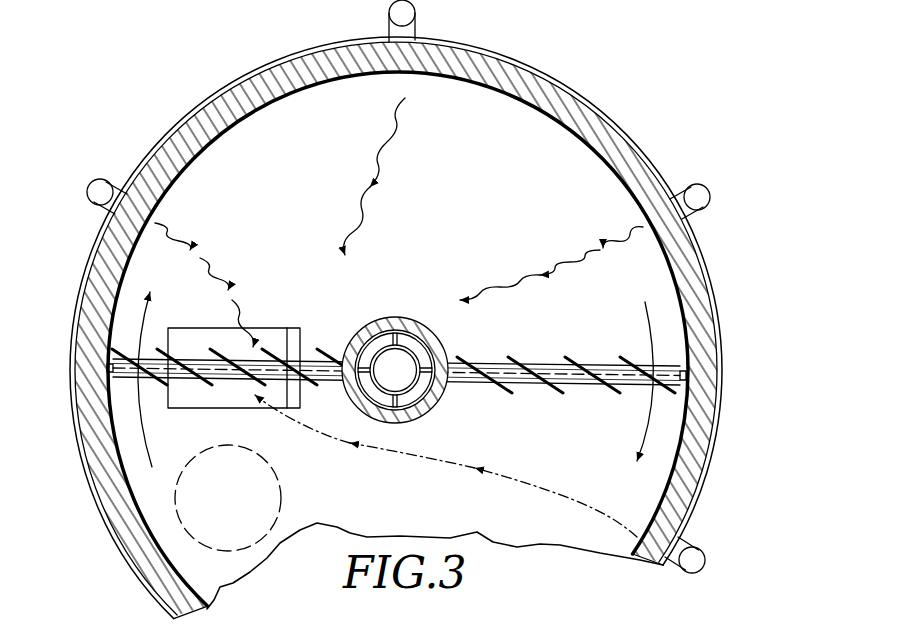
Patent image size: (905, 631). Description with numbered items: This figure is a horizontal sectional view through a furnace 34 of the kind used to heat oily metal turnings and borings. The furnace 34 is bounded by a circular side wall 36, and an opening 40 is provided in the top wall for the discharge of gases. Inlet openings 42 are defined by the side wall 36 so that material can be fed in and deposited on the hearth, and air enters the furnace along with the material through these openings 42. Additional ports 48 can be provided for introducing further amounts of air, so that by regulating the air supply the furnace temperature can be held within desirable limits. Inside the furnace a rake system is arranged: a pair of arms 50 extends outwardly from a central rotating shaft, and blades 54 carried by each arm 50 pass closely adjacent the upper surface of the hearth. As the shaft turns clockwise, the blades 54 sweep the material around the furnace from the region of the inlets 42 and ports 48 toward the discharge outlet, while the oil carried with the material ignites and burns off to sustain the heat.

The furnace 34 is at (672, 113).
The side wall 36 is at (103, 491).
The opening 40 is at (275, 470).
The inlet openings 42 is at (93, 197).
The ports 48 is at (388, 27).
The arms 50 is at (147, 357).
The blades 54 is at (217, 387).